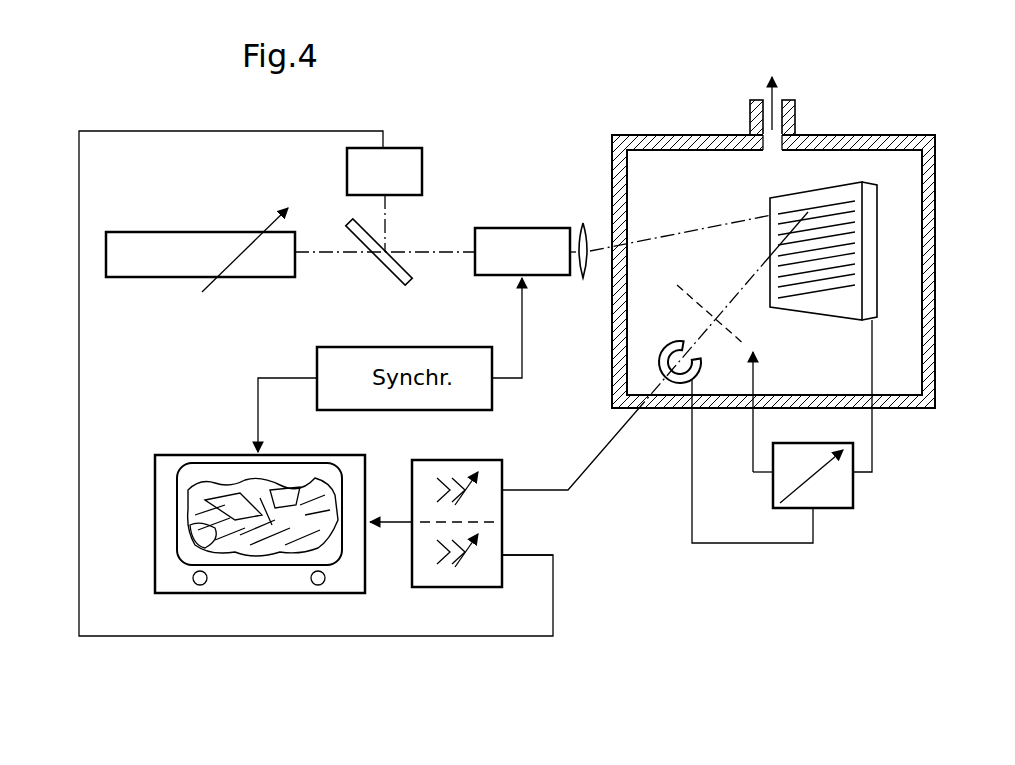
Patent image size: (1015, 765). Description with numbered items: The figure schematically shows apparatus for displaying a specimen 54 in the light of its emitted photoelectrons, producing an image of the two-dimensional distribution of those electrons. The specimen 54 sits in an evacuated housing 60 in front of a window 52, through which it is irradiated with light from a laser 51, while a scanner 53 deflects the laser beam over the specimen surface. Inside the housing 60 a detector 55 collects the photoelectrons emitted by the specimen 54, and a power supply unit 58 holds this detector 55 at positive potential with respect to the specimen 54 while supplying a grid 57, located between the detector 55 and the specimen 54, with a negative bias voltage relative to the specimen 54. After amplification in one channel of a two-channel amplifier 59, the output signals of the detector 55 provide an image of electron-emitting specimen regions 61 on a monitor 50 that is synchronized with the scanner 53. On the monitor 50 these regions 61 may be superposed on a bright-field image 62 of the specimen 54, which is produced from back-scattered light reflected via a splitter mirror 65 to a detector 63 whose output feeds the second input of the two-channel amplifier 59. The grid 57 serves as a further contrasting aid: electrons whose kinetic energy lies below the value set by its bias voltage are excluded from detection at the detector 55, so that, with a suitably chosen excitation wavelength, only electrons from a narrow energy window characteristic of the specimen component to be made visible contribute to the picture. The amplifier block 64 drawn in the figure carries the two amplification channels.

The monitor 50 is at (258, 506).
The laser 51 is at (265, 258).
The window 52 is at (612, 270).
The scanner 53 is at (482, 260).
The specimen 54 is at (878, 262).
The detector 55 is at (698, 364).
The grid 57 is at (748, 343).
The power supply unit 58 is at (848, 495).
The two-channel amplifier 59 is at (502, 522).
The evacuated housing 60 is at (937, 395).
The electron-emitting specimen regions 61 is at (220, 500).
The bright-field vertical image 62 is at (190, 540).
The detector 63 is at (410, 156).
The amplifier unit 64 is at (500, 462).
The splitter mirror 65 is at (405, 280).